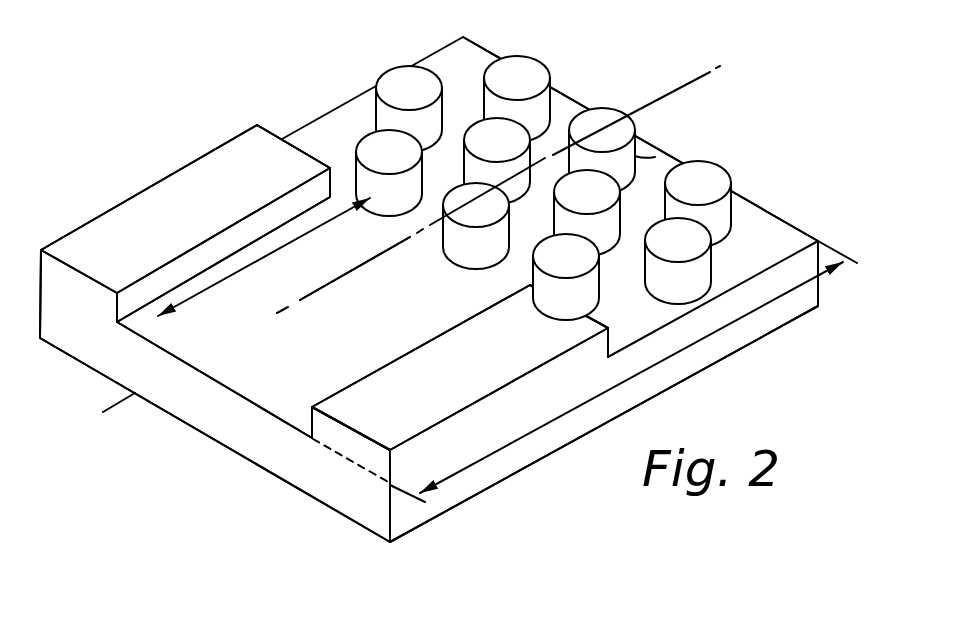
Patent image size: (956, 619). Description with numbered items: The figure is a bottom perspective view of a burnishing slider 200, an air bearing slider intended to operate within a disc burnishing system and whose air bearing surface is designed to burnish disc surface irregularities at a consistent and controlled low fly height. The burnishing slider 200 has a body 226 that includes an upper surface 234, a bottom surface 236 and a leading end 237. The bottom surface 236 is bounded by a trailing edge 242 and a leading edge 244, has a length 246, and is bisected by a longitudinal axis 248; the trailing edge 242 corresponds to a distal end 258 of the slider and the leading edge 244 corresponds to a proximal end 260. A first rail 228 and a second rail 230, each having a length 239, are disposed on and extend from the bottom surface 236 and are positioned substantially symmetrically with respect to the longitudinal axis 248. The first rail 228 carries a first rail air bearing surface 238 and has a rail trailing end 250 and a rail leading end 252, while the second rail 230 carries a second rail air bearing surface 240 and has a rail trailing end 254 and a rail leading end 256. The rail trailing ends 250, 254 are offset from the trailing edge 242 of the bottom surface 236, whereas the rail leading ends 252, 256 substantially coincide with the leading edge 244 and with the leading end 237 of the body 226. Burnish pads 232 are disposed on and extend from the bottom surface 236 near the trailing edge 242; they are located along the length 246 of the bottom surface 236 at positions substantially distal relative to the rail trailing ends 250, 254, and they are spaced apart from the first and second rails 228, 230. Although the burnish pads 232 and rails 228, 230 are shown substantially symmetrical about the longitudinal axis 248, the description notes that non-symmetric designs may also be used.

The burnishing slider 200 is at (817, 195).
The body 226 is at (662, 139).
The first rail 228 is at (498, 368).
The second rail 230 is at (162, 197).
The burnish pads 232 is at (700, 172).
The upper surface 234 is at (123, 385).
The bottom surface 236 is at (412, 323).
The leading end 237 is at (370, 502).
The first rail air bearing surface 238 is at (427, 408).
The length 239 is at (268, 263).
The second rail air bearing surface 240 is at (145, 248).
The trailing edge 242 is at (490, 50).
The leading edge 244 is at (290, 426).
The length 246 is at (620, 388).
The longitudinal axis 248 is at (396, 247).
The rail trailing end 250 is at (599, 319).
The rail leading end 252 is at (373, 455).
The rail trailing end 254 is at (259, 127).
The rail leading end 256 is at (67, 277).
The distal end 258 is at (563, 103).
The proximal end 260 is at (220, 373).